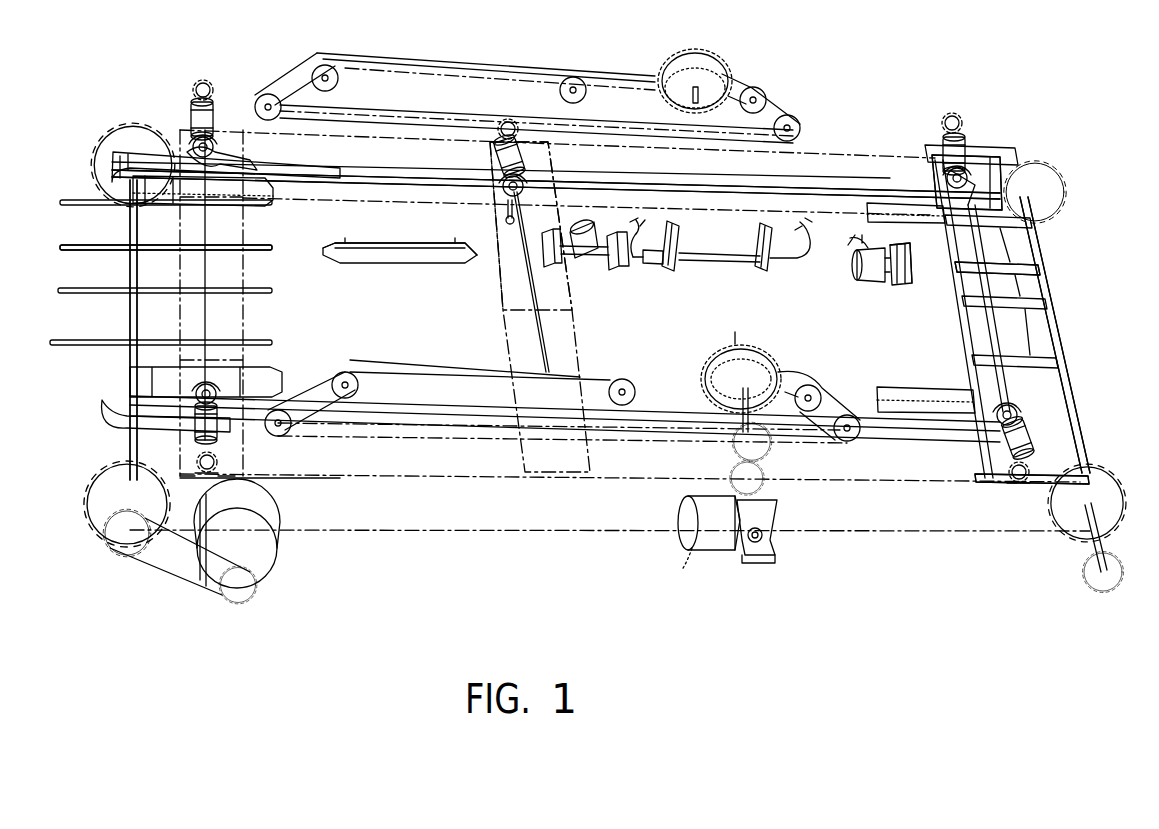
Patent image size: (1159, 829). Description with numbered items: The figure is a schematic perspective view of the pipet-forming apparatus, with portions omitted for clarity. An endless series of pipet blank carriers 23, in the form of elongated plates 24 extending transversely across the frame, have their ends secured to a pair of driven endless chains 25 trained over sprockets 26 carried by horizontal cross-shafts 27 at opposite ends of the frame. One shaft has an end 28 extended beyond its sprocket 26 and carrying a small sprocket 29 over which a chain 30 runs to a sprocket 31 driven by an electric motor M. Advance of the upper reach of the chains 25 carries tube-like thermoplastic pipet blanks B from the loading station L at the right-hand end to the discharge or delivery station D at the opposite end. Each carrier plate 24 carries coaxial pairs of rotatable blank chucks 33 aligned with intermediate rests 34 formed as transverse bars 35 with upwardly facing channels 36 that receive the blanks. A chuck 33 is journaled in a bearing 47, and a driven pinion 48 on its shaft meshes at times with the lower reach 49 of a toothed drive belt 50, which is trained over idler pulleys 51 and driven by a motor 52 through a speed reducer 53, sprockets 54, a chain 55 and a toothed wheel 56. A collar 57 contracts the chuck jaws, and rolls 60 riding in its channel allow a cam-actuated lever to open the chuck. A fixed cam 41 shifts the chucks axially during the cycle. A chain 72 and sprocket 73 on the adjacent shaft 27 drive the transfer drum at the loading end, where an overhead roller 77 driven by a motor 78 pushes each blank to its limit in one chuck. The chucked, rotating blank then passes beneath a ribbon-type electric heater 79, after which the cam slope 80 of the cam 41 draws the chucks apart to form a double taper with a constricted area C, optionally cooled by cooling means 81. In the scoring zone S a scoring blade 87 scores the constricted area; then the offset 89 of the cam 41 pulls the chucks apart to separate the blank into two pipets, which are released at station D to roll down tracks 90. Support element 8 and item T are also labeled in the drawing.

The support frame 8 is at (960, 330).
The pipet blank carriers 23 is at (262, 320).
The elongated plates 24 is at (1045, 486).
The driven endless chains 25 is at (255, 478).
The sprockets 26 is at (110, 142).
The horizontal cross-shafts 27 is at (128, 358).
The shaft end 28 is at (122, 518).
The small sprocket 29 is at (100, 552).
The chain 30 is at (150, 575).
The sprocket 31 is at (222, 597).
The rotatable blank chucks 33 is at (208, 142).
The intermediate rests 34 is at (1035, 226).
The transverse bars 35 is at (997, 262).
The upwardly facing channels 36 is at (1015, 275).
The fixed cam 41 is at (665, 190).
The bearing 47 is at (191, 122).
The driven pinion 48 is at (193, 90).
The lower reach 49 is at (385, 118).
The toothed drive belt 50 is at (406, 78).
The idler pulleys 51 is at (285, 436).
The motor 52 is at (690, 565).
The speed reducer 53 is at (765, 560).
The sprockets 54 is at (775, 470).
The chain 55 is at (730, 452).
The toothed wheel 56 is at (720, 90).
The collar 57 is at (195, 383).
The rolls 60 is at (955, 168).
The chain 72 is at (1105, 548).
The sprocket 73 is at (1108, 582).
The overhead roller 77 is at (900, 292).
The motor 78 is at (862, 282).
The ribbon-type electric heater 79 is at (698, 272).
The cam slope 80 is at (660, 188).
The cooling means 81 is at (585, 270).
The scoring blade 87 is at (402, 255).
The offset 89 is at (248, 152).
The tracks 90 is at (272, 248).
The discharge or delivery station D is at (117, 274).
The blank scoring zone S is at (421, 234).
The constricted area C is at (510, 245).
The pipet blanks B is at (520, 310).
The loading station L is at (973, 132).
The disc assembly T is at (912, 250).
The electric motor M is at (262, 545).